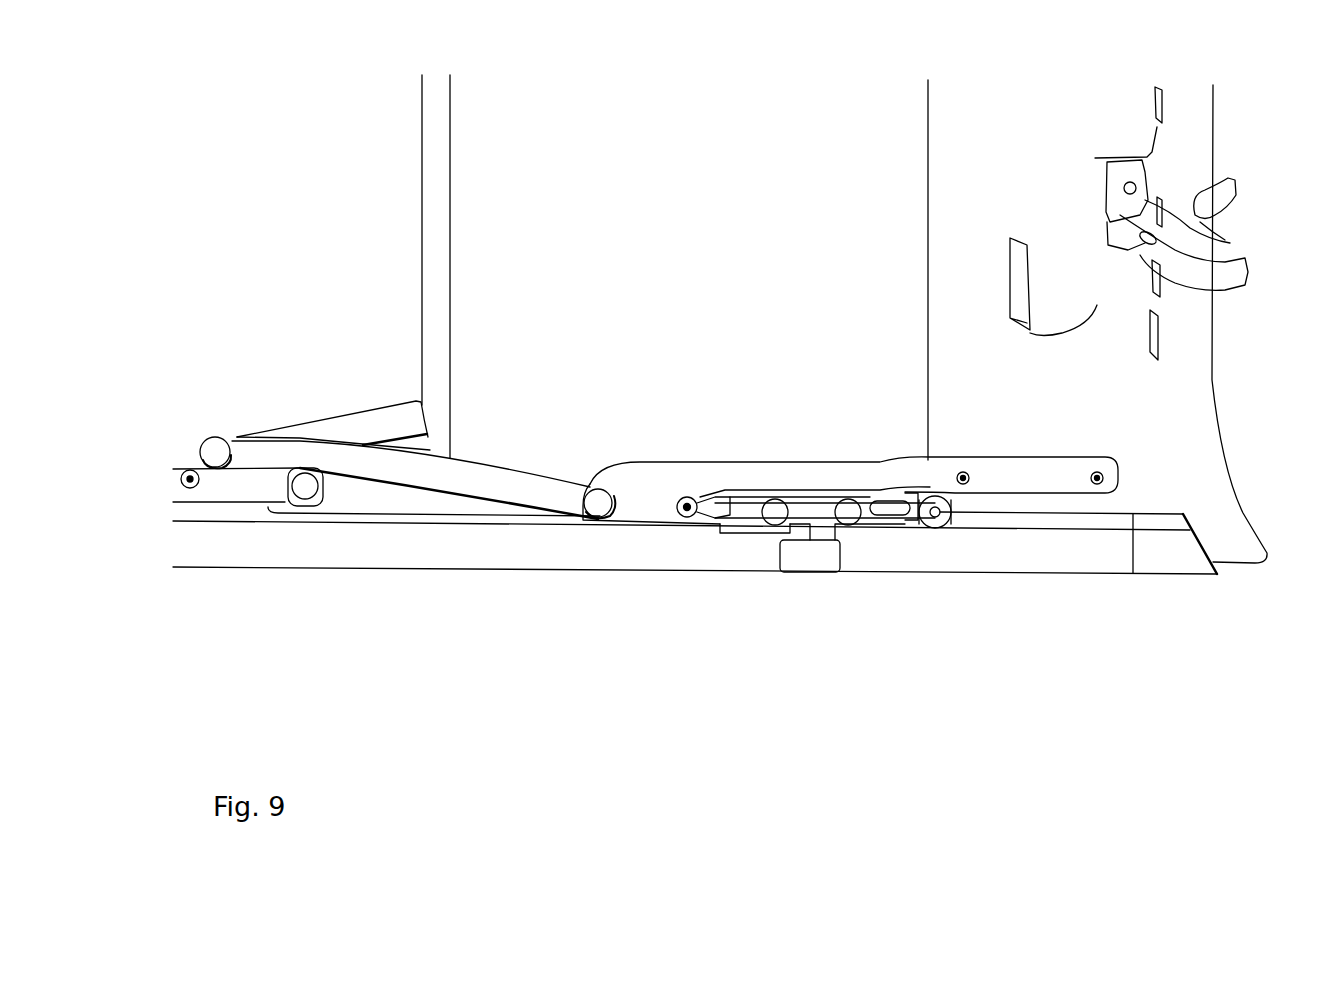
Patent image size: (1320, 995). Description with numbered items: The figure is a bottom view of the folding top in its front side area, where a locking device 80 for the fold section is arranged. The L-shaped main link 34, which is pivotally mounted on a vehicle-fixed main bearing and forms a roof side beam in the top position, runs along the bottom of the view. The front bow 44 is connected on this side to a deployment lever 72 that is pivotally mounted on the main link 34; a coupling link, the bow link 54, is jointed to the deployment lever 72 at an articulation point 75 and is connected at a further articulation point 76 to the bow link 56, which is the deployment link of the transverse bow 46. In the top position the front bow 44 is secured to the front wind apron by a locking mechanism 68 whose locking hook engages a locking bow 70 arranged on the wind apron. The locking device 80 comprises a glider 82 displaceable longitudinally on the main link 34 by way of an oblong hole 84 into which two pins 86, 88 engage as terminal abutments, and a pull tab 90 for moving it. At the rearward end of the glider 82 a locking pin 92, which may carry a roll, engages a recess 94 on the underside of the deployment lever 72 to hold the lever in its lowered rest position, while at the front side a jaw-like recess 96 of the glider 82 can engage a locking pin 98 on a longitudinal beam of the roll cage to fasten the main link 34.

The main link 34 is at (512, 550).
The front bow 44 is at (1182, 437).
The transverse bow 46 is at (434, 212).
The bow link 54 is at (400, 467).
The bow link 56 is at (372, 425).
The locking mechanism 68 is at (1228, 270).
The locking bow 70 is at (1210, 207).
The deployment lever 72 is at (657, 483).
The articulation point 75 is at (598, 503).
The articulation point 76 is at (213, 445).
The locking device 80 is at (738, 530).
The glider 82 is at (800, 527).
The oblong hole 84 is at (815, 506).
The pin 86 is at (773, 511).
The pin 88 is at (848, 510).
The pull tab 90 is at (800, 555).
The locking pin 92 is at (689, 503).
The recess 94 is at (712, 505).
The jaw-like recess 96 is at (887, 508).
The locking pin 98 is at (940, 520).